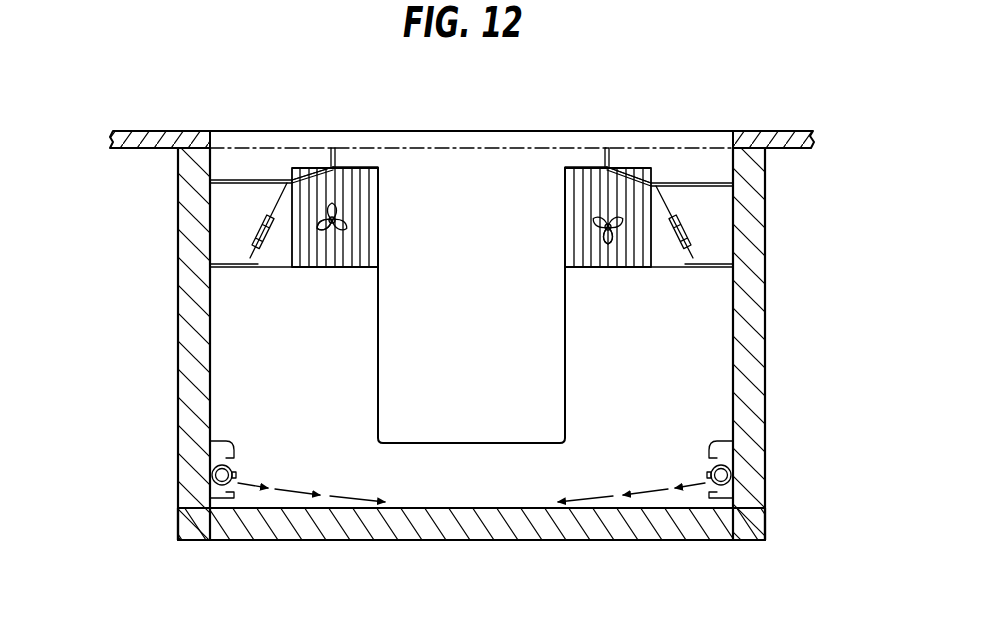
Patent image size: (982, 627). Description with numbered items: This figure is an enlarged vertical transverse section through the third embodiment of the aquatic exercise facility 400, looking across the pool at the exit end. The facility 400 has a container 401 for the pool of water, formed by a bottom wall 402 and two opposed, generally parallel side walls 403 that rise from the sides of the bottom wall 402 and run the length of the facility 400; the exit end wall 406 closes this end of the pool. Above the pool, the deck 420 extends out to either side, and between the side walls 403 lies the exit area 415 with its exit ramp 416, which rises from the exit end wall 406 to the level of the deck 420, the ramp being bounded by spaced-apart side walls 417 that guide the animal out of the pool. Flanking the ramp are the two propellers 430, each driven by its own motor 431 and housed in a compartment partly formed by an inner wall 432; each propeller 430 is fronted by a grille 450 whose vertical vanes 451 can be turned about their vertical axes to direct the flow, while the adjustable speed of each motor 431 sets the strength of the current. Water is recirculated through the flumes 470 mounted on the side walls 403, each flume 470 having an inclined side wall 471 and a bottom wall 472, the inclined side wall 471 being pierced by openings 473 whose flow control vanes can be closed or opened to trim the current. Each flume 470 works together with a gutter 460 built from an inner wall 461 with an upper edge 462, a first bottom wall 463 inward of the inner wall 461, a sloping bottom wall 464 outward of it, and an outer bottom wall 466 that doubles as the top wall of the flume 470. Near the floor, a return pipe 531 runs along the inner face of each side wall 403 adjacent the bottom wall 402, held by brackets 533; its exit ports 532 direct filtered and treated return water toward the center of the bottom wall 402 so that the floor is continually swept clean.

The aquatic exercise facility 400 is at (98, 79).
The container 401 is at (695, 350).
The bottom wall 402 is at (475, 540).
The side walls 403 is at (192, 352).
The exit end wall 406 is at (300, 385).
The exit area 415 is at (448, 175).
The exit ramp 416 is at (427, 443).
The side walls 417 is at (380, 328).
The deck 420 is at (138, 142).
The propellers 430 is at (347, 225).
The motor 431 is at (355, 245).
The inner wall 432 is at (377, 237).
The grille 450 is at (330, 273).
The vertical vanes 451 is at (367, 195).
The gutter 460 is at (237, 160).
The inner wall 461 is at (347, 142).
The upper edge 462 is at (333, 147).
The first bottom wall 463 is at (372, 165).
The sloping bottom wall 464 is at (297, 162).
The outer bottom wall 466 is at (230, 183).
The flumes 470 is at (227, 237).
The inclined side wall 471 is at (252, 270).
The bottom wall 472 is at (220, 258).
The openings 473 is at (266, 233).
The return pipe 531 is at (210, 482).
The exit ports 532 is at (237, 477).
The brackets 533 is at (210, 440).